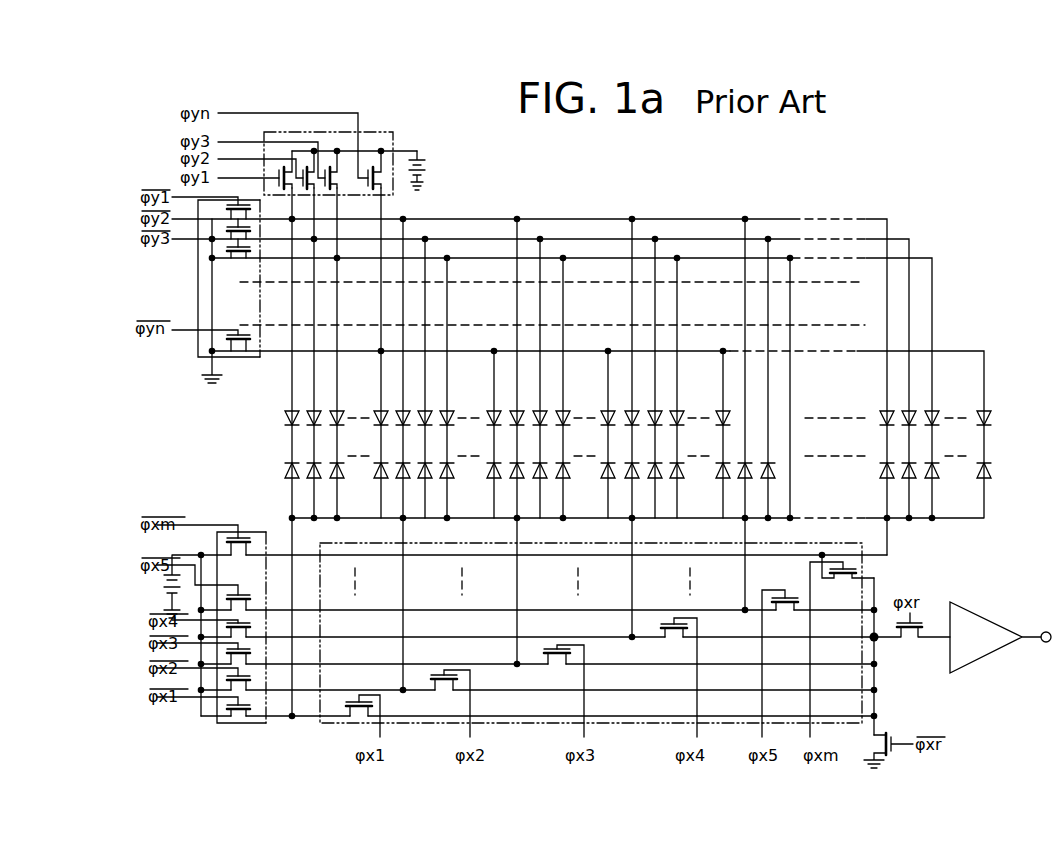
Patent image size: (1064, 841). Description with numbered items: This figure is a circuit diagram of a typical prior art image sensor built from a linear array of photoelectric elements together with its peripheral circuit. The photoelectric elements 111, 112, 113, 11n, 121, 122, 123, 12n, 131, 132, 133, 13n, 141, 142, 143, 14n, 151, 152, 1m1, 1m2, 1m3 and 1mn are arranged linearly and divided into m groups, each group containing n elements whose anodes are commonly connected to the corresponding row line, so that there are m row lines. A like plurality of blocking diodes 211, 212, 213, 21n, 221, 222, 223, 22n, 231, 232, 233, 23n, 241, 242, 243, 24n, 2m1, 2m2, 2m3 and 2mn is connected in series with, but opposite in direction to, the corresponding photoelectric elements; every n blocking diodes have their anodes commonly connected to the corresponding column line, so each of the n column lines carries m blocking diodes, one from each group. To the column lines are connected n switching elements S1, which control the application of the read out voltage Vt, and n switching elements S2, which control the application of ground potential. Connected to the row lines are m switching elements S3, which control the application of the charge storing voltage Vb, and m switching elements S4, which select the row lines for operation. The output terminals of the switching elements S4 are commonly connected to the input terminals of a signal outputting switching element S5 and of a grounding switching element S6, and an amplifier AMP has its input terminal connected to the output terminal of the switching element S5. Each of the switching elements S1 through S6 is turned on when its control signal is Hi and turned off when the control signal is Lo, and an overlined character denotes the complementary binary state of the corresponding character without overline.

The photoelectric element 111 is at (290, 480).
The photoelectric element 112 is at (311, 480).
The photoelectric element 113 is at (340, 480).
The photoelectric element 11n is at (379, 480).
The photoelectric element 121 is at (401, 482).
The photoelectric element 122 is at (423, 482).
The photoelectric element 123 is at (448, 482).
The photoelectric element 12n is at (493, 482).
The photoelectric element 131 is at (515, 482).
The photoelectric element 132 is at (538, 482).
The photoelectric element 133 is at (564, 482).
The photoelectric element 13n is at (606, 482).
The photoelectric element 141 is at (630, 482).
The photoelectric element 142 is at (653, 482).
The photoelectric element 143 is at (678, 482).
The photoelectric element 14n is at (721, 482).
The photoelectric element 151 is at (743, 482).
The photoelectric element 152 is at (766, 482).
The photoelectric element 1m1 is at (884, 482).
The photoelectric element 1m2 is at (907, 482).
The photoelectric element 1m3 is at (934, 482).
The photoelectric element 1mn is at (986, 482).
The blocking diode 211 is at (285, 420).
The blocking diode 212 is at (307, 411).
The blocking diode 213 is at (338, 410).
The blocking diode 21n is at (376, 418).
The blocking diode 221 is at (406, 410).
The blocking diode 222 is at (428, 410).
The blocking diode 223 is at (449, 410).
The blocking diode 22n is at (492, 426).
The blocking diode 231 is at (520, 410).
The blocking diode 232 is at (543, 410).
The blocking diode 233 is at (564, 410).
The blocking diode 23n is at (606, 426).
The blocking diode 241 is at (635, 410).
The blocking diode 242 is at (658, 410).
The blocking diode 243 is at (678, 410).
The blocking diode 24n is at (720, 426).
The blocking diode 2m1 is at (884, 410).
The blocking diode 2m2 is at (912, 410).
The blocking diode 2m3 is at (934, 410).
The blocking diode 2mn is at (987, 410).
The switching element S1 is at (397, 148).
The switching element S2 is at (249, 357).
The switching element S3 is at (262, 725).
The switching element S4 is at (318, 712).
The signal outputting switching element S5 is at (910, 632).
The grounding switching element S6 is at (888, 733).
The amplifier AMP is at (983, 622).
The read out voltage Vt is at (425, 160).
The charge storing voltage Vb is at (189, 555).